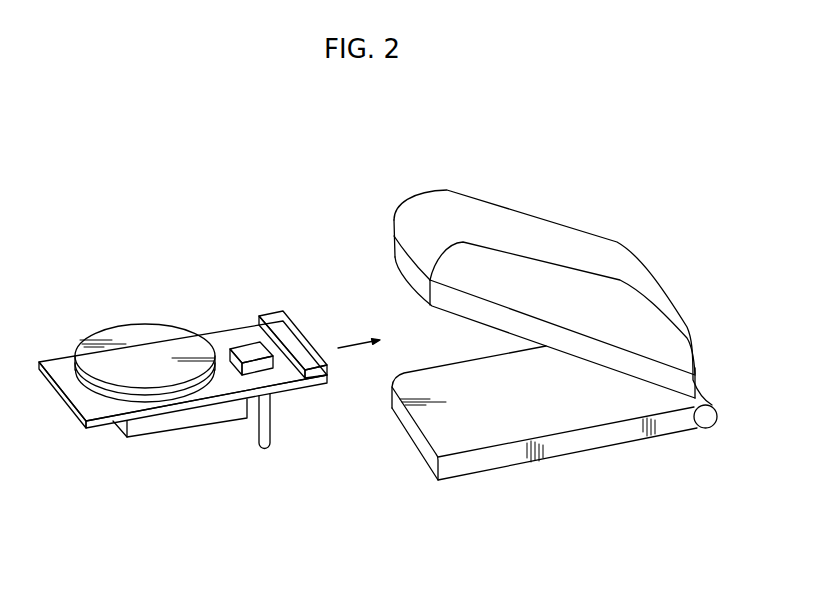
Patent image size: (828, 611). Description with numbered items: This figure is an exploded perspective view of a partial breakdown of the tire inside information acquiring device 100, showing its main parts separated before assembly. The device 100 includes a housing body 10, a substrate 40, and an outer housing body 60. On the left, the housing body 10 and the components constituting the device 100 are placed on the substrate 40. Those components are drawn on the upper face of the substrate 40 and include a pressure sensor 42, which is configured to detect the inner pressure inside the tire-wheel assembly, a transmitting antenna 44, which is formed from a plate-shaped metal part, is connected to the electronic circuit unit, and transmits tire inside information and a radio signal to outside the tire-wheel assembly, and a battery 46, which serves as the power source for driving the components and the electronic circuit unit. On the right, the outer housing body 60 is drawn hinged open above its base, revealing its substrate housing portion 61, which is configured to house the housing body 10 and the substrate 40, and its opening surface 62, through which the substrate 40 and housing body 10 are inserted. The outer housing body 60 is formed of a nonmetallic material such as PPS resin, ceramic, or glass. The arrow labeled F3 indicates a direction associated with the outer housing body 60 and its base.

The tire inside information acquiring device 100 is at (331, 194).
The housing body 10 is at (163, 428).
The substrate 40 is at (297, 389).
The pressure sensor 42 is at (245, 345).
The transmitting antenna 44 is at (275, 315).
The battery 46 is at (160, 340).
The outer housing body 60 is at (443, 210).
The substrate housing portion 61 is at (568, 304).
The opening surface 62 is at (441, 321).
The direction of movement F3 is at (624, 462).